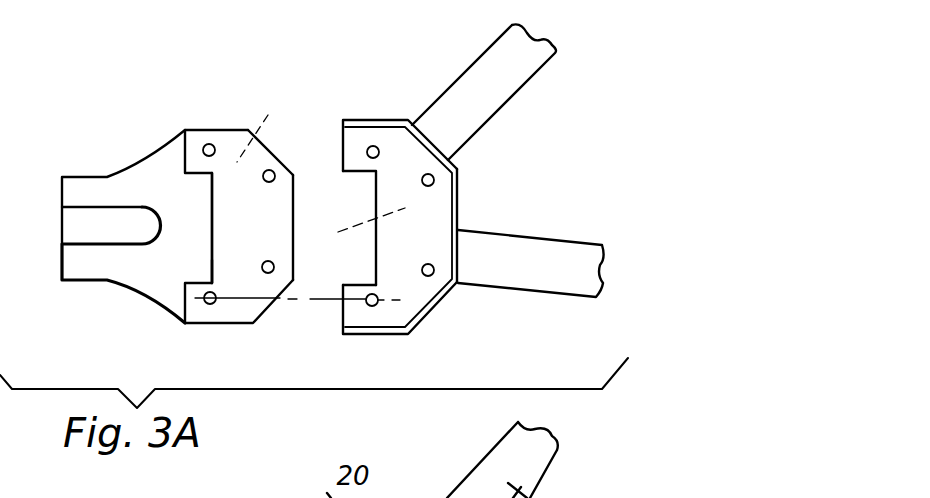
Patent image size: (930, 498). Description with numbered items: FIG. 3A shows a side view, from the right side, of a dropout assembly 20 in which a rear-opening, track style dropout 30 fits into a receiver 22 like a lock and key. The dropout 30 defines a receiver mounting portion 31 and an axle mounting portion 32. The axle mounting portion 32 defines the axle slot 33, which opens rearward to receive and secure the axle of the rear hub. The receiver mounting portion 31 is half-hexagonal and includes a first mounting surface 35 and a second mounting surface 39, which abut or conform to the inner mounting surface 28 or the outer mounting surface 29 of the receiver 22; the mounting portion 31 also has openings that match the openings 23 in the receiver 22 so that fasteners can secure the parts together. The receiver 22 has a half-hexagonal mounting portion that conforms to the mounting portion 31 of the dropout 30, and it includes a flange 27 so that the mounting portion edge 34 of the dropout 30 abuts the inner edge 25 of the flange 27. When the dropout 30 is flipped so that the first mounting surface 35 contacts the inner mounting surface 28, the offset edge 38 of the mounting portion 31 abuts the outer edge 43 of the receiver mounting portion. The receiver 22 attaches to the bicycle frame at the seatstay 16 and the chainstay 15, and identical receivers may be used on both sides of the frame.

The chainstay 15 is at (525, 237).
The seatstay 16 is at (455, 83).
The dropout assembly 20 is at (338, 92).
The receiver 22 is at (357, 143).
The openings 23 is at (379, 152).
The inner edge of flange 25 is at (448, 248).
The flange 27 is at (458, 200).
The inner mounting surface 28 is at (300, 254).
The outer mounting surface 29 is at (352, 305).
The dropout 30 is at (202, 137).
The receiver mounting portion 31 is at (264, 160).
The axle mounting portion 32 is at (153, 270).
The axle slot 33 is at (90, 218).
The mounting portion edge 34 is at (293, 197).
The first mounting surface 35 is at (268, 124).
The offset edge 38 is at (213, 225).
The second mounting surface 39 is at (235, 255).
The outer edge of mounting portion 43 is at (375, 257).